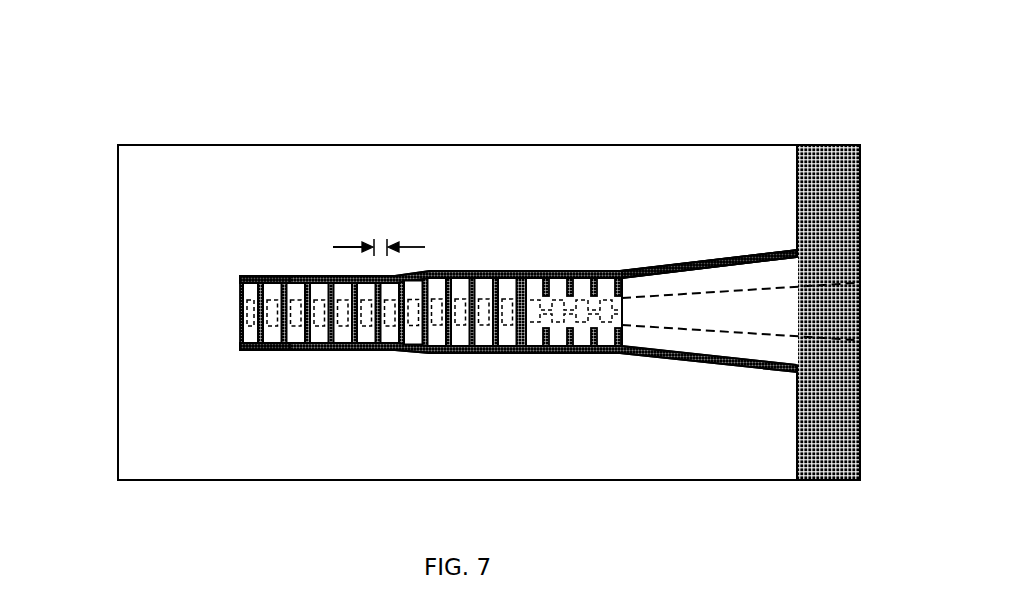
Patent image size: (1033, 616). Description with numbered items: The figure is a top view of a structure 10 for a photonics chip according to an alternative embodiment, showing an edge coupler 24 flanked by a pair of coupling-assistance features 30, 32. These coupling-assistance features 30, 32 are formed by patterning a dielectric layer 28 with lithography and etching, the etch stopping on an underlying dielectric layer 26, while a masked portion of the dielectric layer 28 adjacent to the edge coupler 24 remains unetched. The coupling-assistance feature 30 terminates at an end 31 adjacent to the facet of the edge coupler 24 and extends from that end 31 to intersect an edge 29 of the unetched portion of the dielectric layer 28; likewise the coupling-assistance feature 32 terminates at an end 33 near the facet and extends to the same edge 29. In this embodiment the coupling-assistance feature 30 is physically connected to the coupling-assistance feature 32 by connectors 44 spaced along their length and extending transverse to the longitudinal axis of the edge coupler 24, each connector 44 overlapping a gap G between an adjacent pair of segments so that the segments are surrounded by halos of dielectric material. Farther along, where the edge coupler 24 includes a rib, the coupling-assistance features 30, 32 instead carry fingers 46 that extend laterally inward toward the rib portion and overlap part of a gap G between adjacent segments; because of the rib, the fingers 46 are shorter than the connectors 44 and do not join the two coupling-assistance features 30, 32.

The structure 10 is at (108, 104).
The edge coupler 24 is at (508, 236).
The dielectric layer 26 is at (155, 368).
The dielectric layer 28 is at (828, 428).
The edge 29 is at (797, 222).
The coupling-assistance feature 30 is at (493, 271).
The end 31 is at (242, 280).
The coupling-assistance feature 32 is at (473, 353).
The end 33 is at (243, 347).
The connectors 44 is at (290, 302).
The fingers 46 is at (572, 293).
The gap G is at (379, 232).